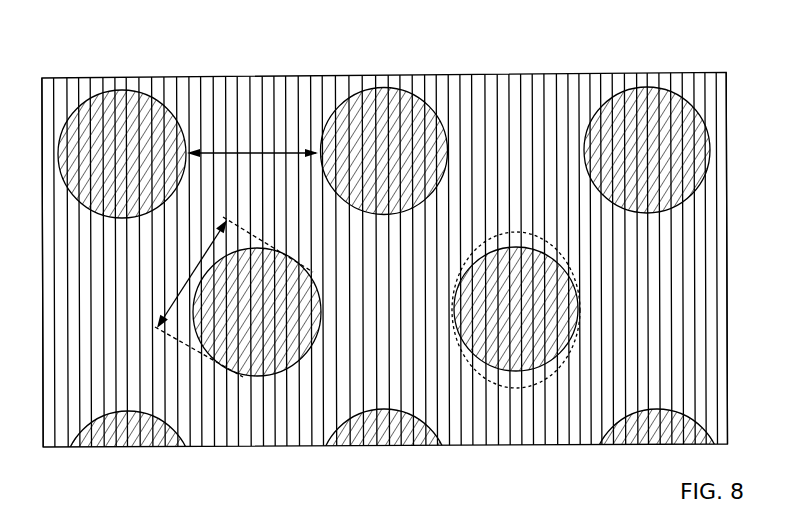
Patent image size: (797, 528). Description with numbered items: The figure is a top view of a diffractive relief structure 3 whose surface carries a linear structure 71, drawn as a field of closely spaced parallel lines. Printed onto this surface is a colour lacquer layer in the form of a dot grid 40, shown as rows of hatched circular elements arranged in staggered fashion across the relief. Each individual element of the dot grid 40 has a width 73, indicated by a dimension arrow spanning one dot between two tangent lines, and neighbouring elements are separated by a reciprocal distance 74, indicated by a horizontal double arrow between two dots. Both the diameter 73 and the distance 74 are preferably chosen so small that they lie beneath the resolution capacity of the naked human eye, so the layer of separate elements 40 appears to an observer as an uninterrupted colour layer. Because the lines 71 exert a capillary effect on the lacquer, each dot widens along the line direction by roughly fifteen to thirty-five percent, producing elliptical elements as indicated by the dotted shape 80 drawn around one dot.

The diffractive relief structure 3 is at (694, 70).
The linear structure 71 is at (534, 82).
The dot grid 40 is at (125, 89).
The dotted shape 80 is at (546, 242).
The reciprocal distance 74 is at (257, 150).
The width 73 is at (192, 270).